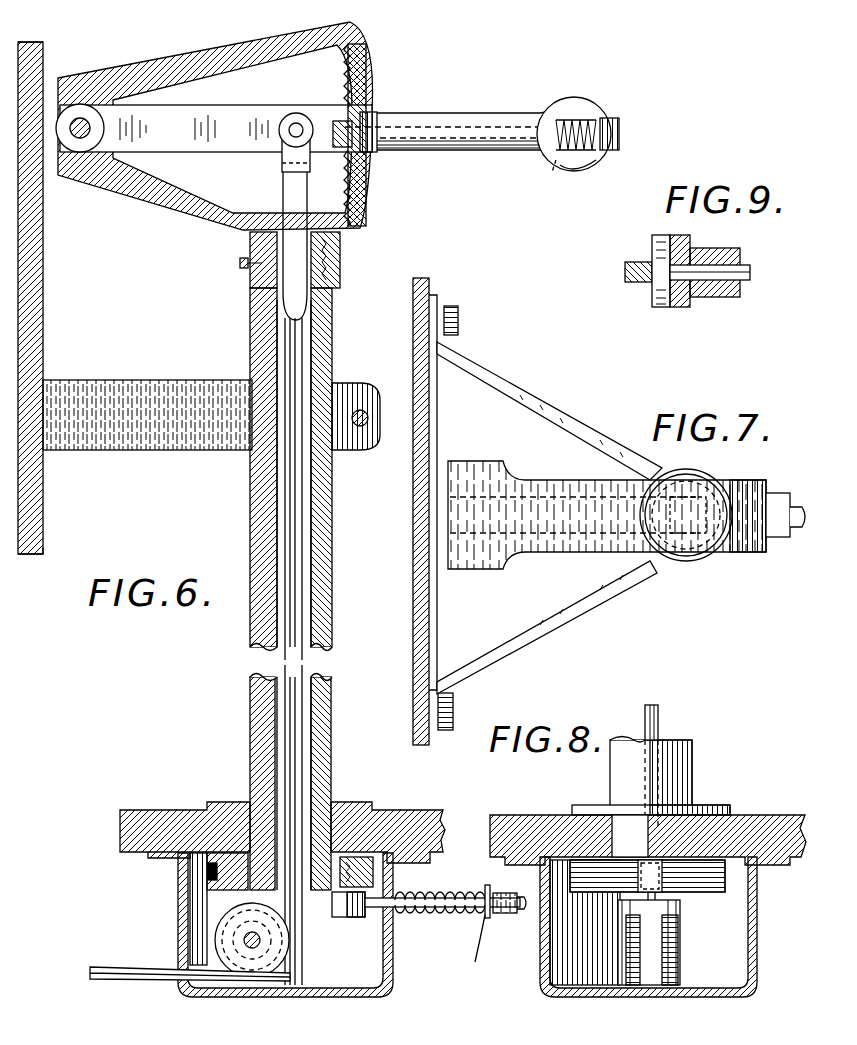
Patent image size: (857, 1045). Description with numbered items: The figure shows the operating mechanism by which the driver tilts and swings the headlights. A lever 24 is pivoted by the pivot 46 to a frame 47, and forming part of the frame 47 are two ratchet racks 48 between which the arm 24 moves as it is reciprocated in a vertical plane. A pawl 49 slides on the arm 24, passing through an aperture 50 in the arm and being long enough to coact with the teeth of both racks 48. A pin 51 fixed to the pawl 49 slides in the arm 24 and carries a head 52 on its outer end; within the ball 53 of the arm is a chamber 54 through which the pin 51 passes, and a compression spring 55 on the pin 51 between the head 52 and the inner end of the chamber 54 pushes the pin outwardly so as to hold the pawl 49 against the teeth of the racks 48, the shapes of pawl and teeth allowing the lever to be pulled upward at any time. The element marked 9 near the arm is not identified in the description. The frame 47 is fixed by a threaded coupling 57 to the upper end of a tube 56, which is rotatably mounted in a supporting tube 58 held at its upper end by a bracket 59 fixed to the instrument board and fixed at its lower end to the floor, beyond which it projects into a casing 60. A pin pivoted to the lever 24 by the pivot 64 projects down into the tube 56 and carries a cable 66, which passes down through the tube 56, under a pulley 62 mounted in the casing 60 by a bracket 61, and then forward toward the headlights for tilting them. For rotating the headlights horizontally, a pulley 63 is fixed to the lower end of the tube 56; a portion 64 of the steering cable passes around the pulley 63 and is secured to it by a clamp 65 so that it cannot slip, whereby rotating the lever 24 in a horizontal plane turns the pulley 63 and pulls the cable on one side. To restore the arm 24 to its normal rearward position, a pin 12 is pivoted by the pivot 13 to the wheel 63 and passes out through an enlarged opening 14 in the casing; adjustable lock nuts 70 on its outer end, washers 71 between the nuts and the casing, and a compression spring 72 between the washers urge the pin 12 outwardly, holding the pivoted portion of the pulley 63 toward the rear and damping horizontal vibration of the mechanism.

In FIG. 6, the operating rod 9 is at (416, 124).
In FIG. 6, the pin 12 is at (436, 916).
In FIG. 6, the pivot 13 is at (350, 918).
In FIG. 6, the enlarged opening 14 is at (396, 910).
In FIG. 6, the lever 24 is at (535, 116).
In FIG. 7, the lever 24 is at (773, 495).
In FIG. 6, the pivot 46 is at (82, 118).
In FIG. 6, the frame 47 is at (148, 72).
In FIG. 7, the frame 47 is at (540, 483).
In FIG. 6, the ratchet racks 48 is at (369, 63).
In FIG. 9, the ratchet racks 48 is at (686, 250).
In FIG. 6, the pawl 49 is at (374, 125).
In FIG. 9, the pawl 49 is at (660, 246).
In FIG. 6, the aperture 50 is at (338, 119).
In FIG. 9, the aperture 50 is at (652, 290).
In FIG. 6, the pin 51 is at (481, 150).
In FIG. 7, the pin 51 is at (800, 513).
In FIG. 9, the pin 51 is at (740, 268).
In FIG. 6, the head 52 is at (620, 136).
In FIG. 6, the ball 53 is at (590, 106).
In FIG. 6, the chamber 54 is at (590, 172).
In FIG. 6, the compression spring 55 is at (558, 175).
In FIG. 6, the tube 56 is at (332, 326).
In FIG. 6, the coupling 57 is at (343, 264).
In FIG. 6, the supporting tube 58 is at (333, 530).
In FIG. 8, the supporting tube 58 is at (690, 786).
In FIG. 6, the bracket 59 is at (178, 450).
In FIG. 7, the bracket 59 is at (589, 436).
In FIG. 6, the casing 60 is at (391, 993).
In FIG. 8, the casing 60 is at (756, 986).
In FIG. 6, the bracket 61 is at (258, 979).
In FIG. 8, the bracket 61 is at (680, 980).
In FIG. 6, the pulley 62 is at (220, 932).
In FIG. 8, the pulley 62 is at (668, 912).
In FIG. 6, the pulley 63 is at (380, 822).
In FIG. 6, the pivot 64 is at (290, 142).
In FIG. 8, the pivot 64 is at (608, 885).
In FIG. 6, the clamp 65 is at (380, 886).
In FIG. 8, the clamp 65 is at (663, 890).
In FIG. 6, the cable 66 is at (290, 352).
In FIG. 8, the cable 66 is at (660, 730).
In FIG. 6, the adjustable lock nuts 70 is at (496, 915).
In FIG. 6, the washers 71 is at (487, 888).
In FIG. 6, the compression spring 72 is at (483, 920).